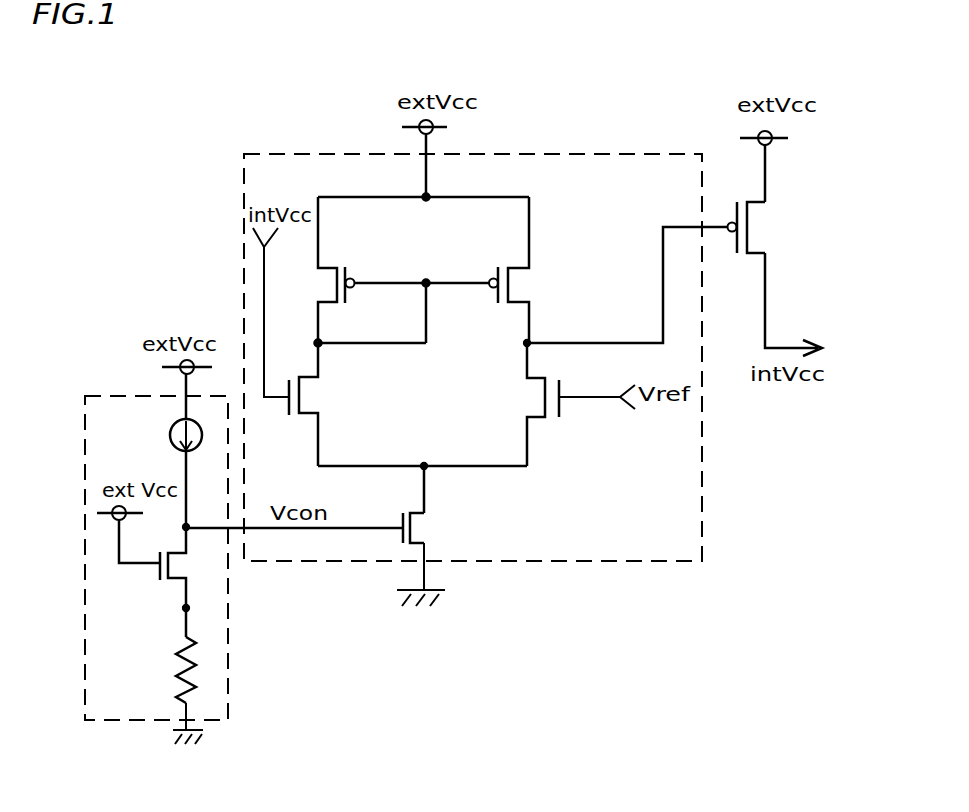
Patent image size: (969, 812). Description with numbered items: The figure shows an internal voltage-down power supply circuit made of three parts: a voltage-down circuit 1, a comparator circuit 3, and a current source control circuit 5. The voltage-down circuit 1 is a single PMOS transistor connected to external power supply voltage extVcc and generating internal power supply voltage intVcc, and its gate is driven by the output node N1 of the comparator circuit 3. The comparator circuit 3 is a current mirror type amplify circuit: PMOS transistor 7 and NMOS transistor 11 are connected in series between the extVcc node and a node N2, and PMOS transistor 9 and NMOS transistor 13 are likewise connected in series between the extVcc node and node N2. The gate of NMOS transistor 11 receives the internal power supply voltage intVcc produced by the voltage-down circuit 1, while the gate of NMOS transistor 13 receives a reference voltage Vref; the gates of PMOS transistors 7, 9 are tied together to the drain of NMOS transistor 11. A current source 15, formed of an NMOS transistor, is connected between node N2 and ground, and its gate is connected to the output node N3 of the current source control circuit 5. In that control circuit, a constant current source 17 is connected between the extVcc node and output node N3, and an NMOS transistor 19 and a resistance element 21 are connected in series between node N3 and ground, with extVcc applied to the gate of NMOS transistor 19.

The voltage-down circuit 1 is at (750, 226).
The comparator circuit 3 is at (702, 500).
The current source control circuit 5 is at (227, 653).
The PMOS transistor 7 is at (338, 262).
The PMOS transistor 9 is at (497, 262).
The NMOS transistor 11 is at (308, 390).
The NMOS transistor 13 is at (537, 397).
The current source 15 is at (415, 527).
The constant current source 17 is at (172, 428).
The NMOS transistor 19 is at (160, 583).
The resistance element 21 is at (177, 672).
The output node N1 is at (529, 340).
The node N2 is at (428, 468).
The output node N3 is at (190, 530).